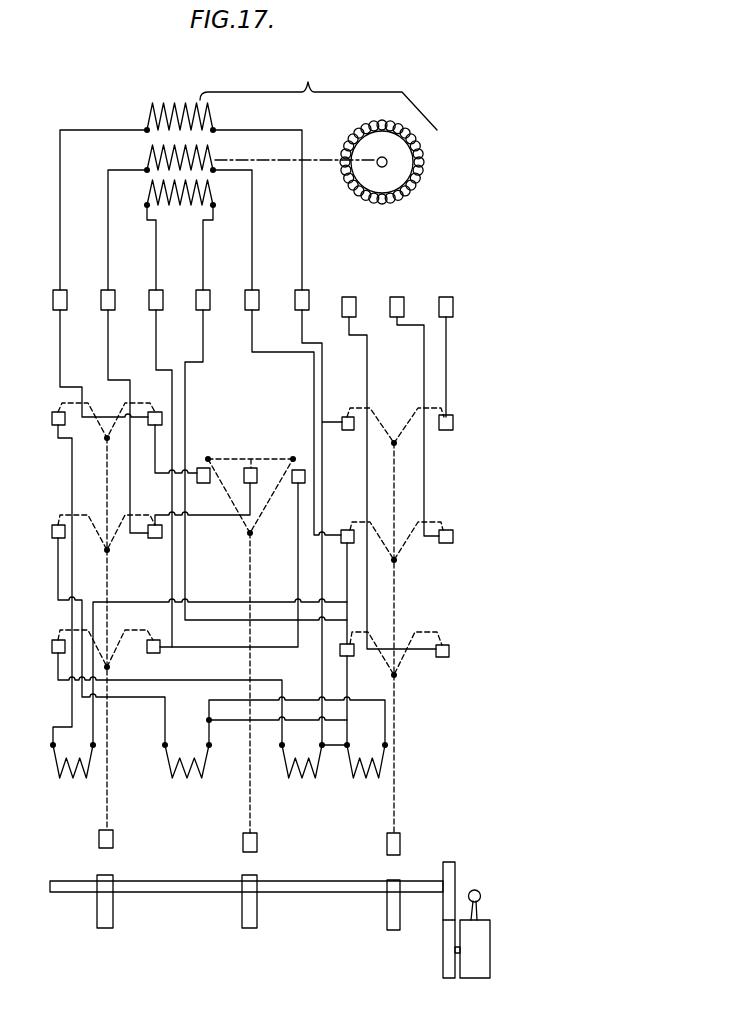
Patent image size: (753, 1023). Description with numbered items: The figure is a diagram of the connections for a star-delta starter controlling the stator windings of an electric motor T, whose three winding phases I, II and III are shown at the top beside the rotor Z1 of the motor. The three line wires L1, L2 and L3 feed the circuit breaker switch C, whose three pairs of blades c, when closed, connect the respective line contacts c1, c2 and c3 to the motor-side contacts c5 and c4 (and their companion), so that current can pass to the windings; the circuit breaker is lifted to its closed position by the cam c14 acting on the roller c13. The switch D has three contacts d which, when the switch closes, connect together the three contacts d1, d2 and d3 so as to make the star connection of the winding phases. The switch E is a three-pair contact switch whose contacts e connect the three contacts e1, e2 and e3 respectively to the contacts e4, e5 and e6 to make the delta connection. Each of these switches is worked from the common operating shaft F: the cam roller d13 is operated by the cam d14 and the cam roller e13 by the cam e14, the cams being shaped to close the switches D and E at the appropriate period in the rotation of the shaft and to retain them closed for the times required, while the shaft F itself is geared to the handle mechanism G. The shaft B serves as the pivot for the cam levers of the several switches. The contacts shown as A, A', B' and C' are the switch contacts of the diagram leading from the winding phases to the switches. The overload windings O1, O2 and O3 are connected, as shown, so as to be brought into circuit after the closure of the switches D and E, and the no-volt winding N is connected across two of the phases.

The stator winding phase I is at (180, 103).
The stator winding phase II is at (186, 156).
The stator winding phase III is at (190, 192).
The motor T is at (318, 94).
The motor armature Z1 is at (423, 168).
The contact A' is at (88, 273).
The contact B' is at (116, 351).
The contact C' is at (152, 426).
The circuit breaker switch C is at (265, 412).
The shaft B is at (277, 352).
The contact A is at (277, 437).
The line wire L1 is at (385, 459).
The line wire L2 is at (411, 402).
The line wire L3 is at (443, 343).
The contacts e is at (60, 403).
The contact e1 is at (153, 425).
The contact e2 is at (155, 540).
The contact e3 is at (152, 653).
The contact e4 is at (50, 418).
The contact e5 is at (52, 530).
The contact e6 is at (55, 638).
The cam roller e13 is at (120, 840).
The cam e14 is at (108, 922).
The three-pair contact switch E is at (107, 477).
The contacts d is at (267, 458).
The contact d1 is at (203, 483).
The contact d2 is at (248, 470).
The contact d3 is at (298, 468).
The cam roller d13 is at (255, 843).
The cam d14 is at (250, 922).
The switch D is at (250, 553).
The blades c is at (397, 487).
The contact c1 is at (449, 651).
The contact c2 is at (453, 539).
The contact c3 is at (453, 423).
The contact c4 is at (347, 430).
The contact c5 is at (345, 530).
The roller c13 is at (402, 843).
The cam c14 is at (393, 930).
The overload winding O1 is at (70, 778).
The overload winding O2 is at (187, 778).
The overload winding O3 is at (302, 778).
The no-volt winding N is at (366, 775).
The operating shaft F is at (298, 890).
The handle mechanism G is at (477, 903).